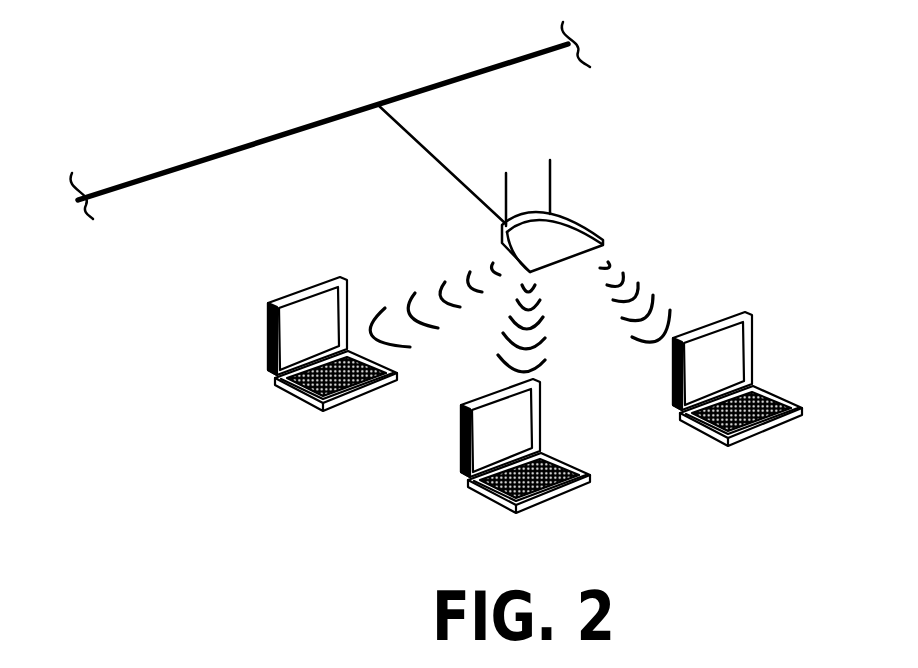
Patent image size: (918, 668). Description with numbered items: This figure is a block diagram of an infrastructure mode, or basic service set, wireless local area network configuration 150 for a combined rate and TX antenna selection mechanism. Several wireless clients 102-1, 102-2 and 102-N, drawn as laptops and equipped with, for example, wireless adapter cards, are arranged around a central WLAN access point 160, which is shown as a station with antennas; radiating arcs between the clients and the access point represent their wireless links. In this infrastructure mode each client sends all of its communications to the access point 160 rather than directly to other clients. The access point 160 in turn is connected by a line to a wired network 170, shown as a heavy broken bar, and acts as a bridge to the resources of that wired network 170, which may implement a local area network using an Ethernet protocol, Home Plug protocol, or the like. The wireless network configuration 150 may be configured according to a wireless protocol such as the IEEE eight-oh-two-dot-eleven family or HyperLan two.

The wired network 170 is at (306, 120).
The WLAN access point 160 is at (595, 226).
The wireless local area network configuration 150 is at (862, 511).
The wireless client 102-N is at (268, 338).
The wireless client 102-2 is at (463, 447).
The wireless client 102-1 is at (797, 345).